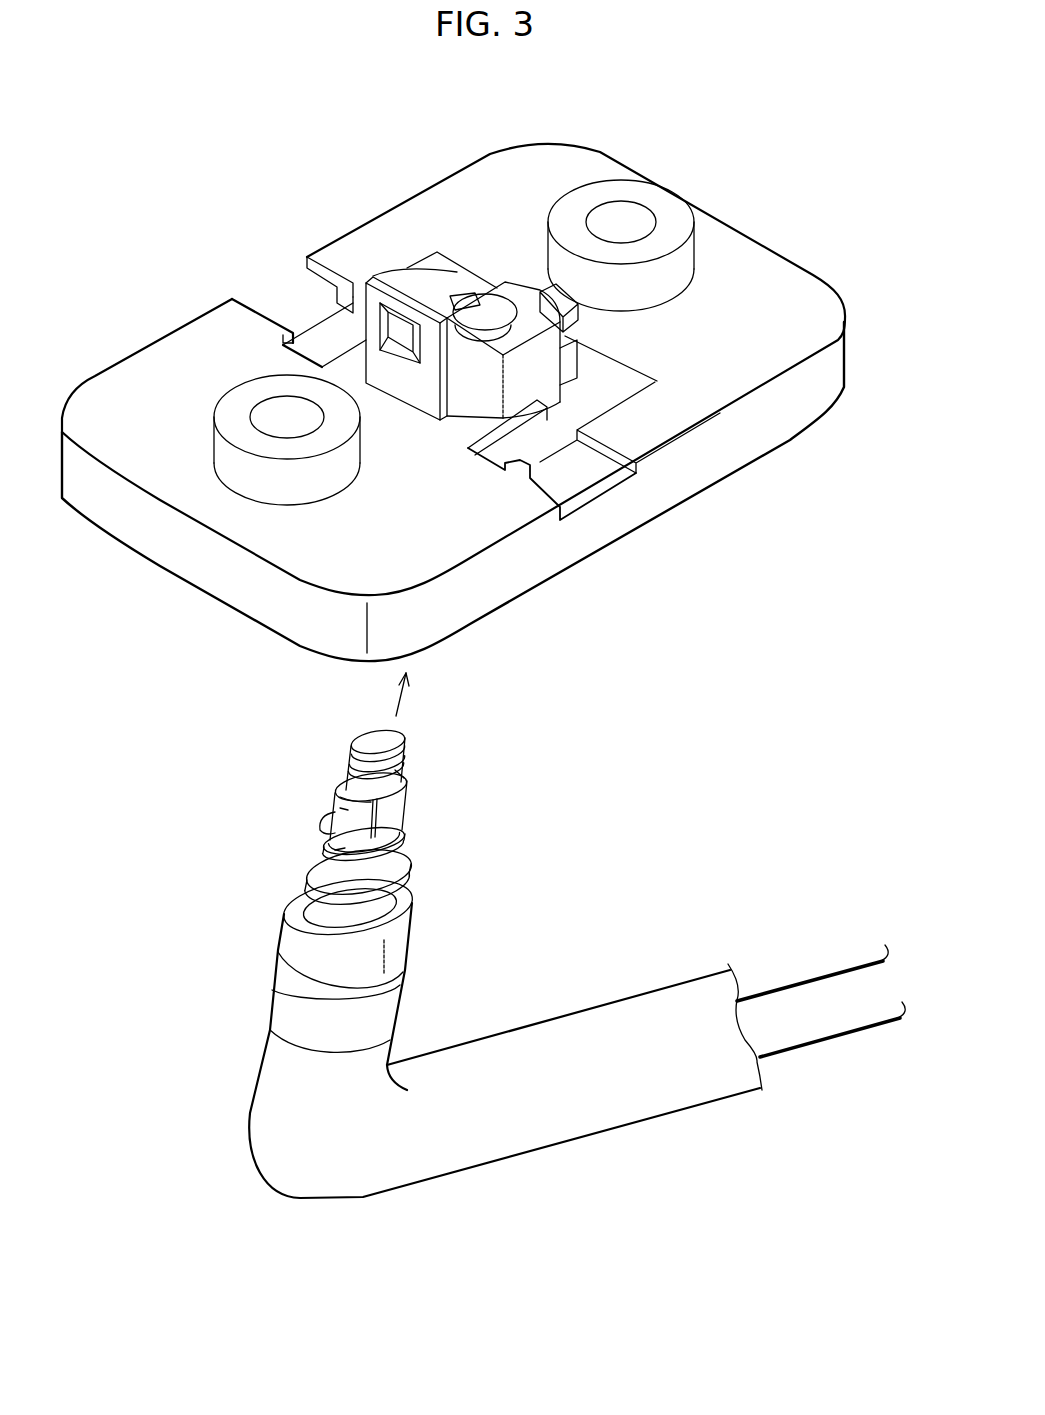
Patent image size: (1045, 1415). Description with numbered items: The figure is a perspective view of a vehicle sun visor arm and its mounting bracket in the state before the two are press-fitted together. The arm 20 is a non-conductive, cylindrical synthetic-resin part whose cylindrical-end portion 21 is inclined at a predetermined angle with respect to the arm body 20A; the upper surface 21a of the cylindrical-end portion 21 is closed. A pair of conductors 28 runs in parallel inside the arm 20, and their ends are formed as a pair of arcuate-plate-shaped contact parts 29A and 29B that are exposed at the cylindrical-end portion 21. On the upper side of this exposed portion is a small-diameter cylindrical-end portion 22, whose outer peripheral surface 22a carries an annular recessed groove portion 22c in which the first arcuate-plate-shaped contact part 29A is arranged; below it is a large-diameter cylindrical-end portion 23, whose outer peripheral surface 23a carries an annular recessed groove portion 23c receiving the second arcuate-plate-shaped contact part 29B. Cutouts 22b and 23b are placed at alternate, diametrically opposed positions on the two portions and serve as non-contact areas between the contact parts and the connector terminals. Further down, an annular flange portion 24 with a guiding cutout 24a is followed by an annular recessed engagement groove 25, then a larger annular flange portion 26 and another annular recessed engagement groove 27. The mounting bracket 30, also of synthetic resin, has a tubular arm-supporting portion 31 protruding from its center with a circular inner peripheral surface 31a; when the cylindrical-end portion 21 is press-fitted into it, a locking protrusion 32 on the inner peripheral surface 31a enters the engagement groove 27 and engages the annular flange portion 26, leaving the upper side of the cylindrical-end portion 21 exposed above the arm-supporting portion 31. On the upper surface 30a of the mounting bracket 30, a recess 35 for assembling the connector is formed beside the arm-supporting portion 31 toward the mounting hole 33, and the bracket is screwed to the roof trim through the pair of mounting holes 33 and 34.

The arm 20 is at (290, 1198).
The arm body 20A is at (620, 1117).
The cylindrical-end portion 21 is at (369, 808).
The upper surface 21a is at (373, 737).
The small-diameter cylindrical-end portion 22 is at (410, 749).
The outer peripheral surface 22a is at (356, 757).
The cutout 22b is at (370, 738).
The annular recessed groove portion 22c is at (352, 770).
The large-diameter cylindrical-end portion 23 is at (412, 795).
The outer peripheral surface 23a is at (340, 800).
The cutout 23b is at (393, 815).
The annular recessed groove portion 23c is at (347, 810).
The annular flange portion 24 is at (410, 843).
The cutout 24a is at (340, 851).
The annular recessed engagement groove 25 is at (385, 868).
The annular flange portion 26 is at (323, 890).
The annular recessed engagement groove 27 is at (383, 907).
The conductors 28 is at (797, 988).
The first arcuate-plate-shaped contact part 29A is at (401, 775).
The second arcuate-plate-shaped contact part 29B is at (322, 825).
The mounting bracket 30 is at (752, 228).
The upper surface 30a is at (783, 294).
The arm-supporting portion 31 is at (421, 270).
The inner peripheral surface 31a is at (497, 317).
The locking protrusion 32 is at (466, 323).
The mounting hole 33 is at (622, 222).
The mounting hole 34 is at (278, 413).
The recess for assembling the connector 35 is at (598, 398).